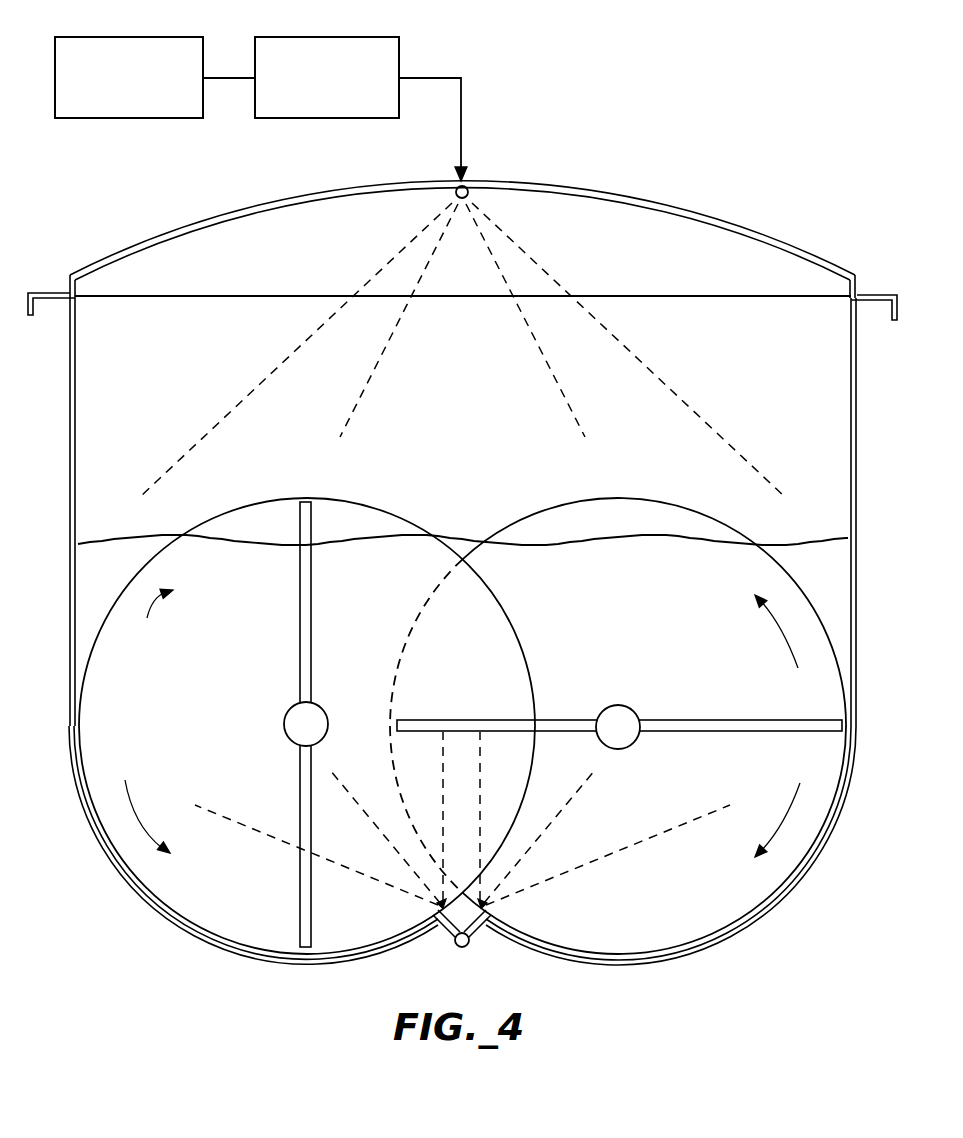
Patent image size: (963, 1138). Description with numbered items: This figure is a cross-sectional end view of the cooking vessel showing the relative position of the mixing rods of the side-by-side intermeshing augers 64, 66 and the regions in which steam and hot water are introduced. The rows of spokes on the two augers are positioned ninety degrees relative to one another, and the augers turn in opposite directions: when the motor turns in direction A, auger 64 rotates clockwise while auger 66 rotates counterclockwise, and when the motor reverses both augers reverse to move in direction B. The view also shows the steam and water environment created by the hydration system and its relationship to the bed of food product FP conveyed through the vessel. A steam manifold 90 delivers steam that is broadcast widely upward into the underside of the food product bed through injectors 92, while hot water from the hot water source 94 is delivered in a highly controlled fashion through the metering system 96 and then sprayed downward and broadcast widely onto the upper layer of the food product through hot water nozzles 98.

The hot water source 94 is at (133, 37).
The metering system 96 is at (335, 37).
The hot water nozzles 98 is at (466, 186).
The auger 66 is at (208, 905).
The auger 64 is at (678, 920).
The injectors 92 is at (440, 925).
The steam manifold 90 is at (462, 948).
The food product FP is at (95, 592).